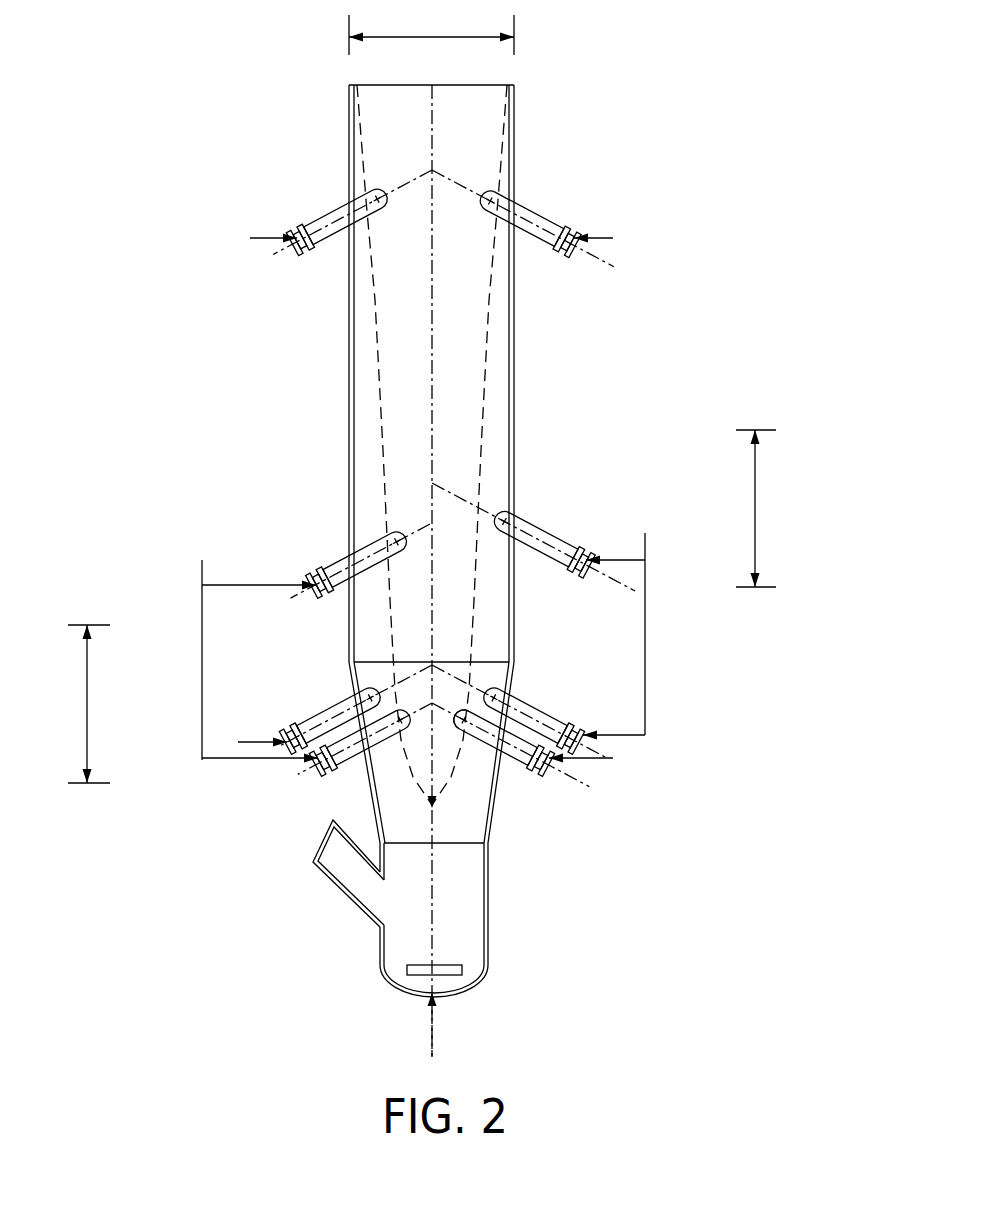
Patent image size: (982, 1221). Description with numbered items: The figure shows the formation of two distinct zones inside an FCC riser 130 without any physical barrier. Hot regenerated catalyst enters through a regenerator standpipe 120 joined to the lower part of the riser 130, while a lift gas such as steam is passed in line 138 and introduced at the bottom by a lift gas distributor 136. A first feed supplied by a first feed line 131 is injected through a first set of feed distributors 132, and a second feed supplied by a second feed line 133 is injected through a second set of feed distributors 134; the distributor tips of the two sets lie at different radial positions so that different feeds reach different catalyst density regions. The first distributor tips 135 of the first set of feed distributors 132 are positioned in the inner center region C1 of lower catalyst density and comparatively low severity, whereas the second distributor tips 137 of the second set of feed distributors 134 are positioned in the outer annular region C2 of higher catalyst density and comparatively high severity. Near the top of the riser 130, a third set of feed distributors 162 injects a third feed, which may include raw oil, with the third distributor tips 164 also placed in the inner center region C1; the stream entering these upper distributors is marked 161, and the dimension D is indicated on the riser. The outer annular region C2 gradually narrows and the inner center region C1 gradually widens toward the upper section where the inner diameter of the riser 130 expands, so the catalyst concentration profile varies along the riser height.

The regenerator standpipe 120 is at (343, 893).
The riser 130 is at (514, 408).
The first feed line 131 is at (202, 570).
The first set of feed distributors 132 is at (350, 558).
The second feed line 133 is at (645, 568).
The second set of feed distributors 134 is at (543, 520).
The first distributor tips 135 is at (458, 717).
The lift gas distributor 136 is at (460, 965).
The second distributor tips 137 is at (502, 670).
The lift gas line 138 is at (430, 1027).
The top gas stream 161 is at (258, 238).
The third set of feed distributors 162 is at (343, 203).
The third distributor tips 164 is at (483, 198).
The inner center region C1 is at (402, 383).
The outer annular region C2 is at (500, 378).
The diameter D is at (436, 391).